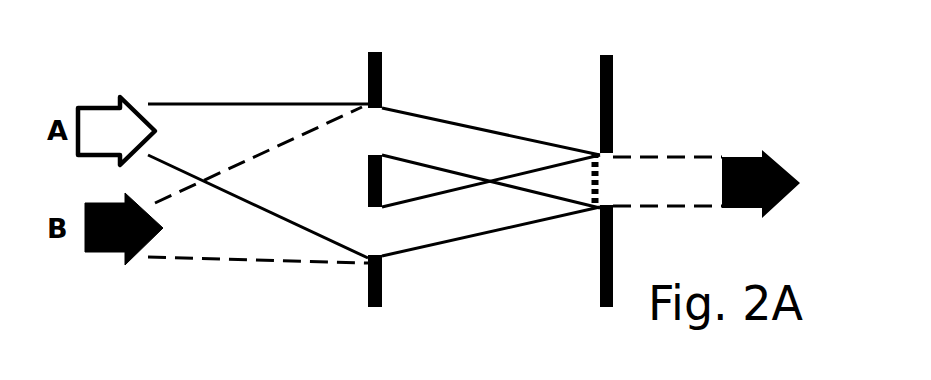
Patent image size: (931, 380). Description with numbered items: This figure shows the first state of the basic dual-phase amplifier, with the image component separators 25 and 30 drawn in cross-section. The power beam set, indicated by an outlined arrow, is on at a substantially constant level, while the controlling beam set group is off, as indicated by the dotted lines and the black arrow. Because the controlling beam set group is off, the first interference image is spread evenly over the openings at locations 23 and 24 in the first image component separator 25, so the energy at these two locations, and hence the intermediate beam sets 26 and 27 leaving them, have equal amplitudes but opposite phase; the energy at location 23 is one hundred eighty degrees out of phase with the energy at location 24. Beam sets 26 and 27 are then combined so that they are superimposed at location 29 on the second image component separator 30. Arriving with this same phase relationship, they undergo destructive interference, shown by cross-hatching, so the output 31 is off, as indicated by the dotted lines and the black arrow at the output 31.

The location 23 is at (371, 228).
The location 24 is at (370, 138).
The image component separator 25 is at (366, 77).
The intermediate beam set 26 is at (513, 201).
The intermediate beam set 27 is at (500, 158).
The location 29 is at (587, 177).
The image component separator 30 is at (614, 93).
The output 31 is at (779, 184).